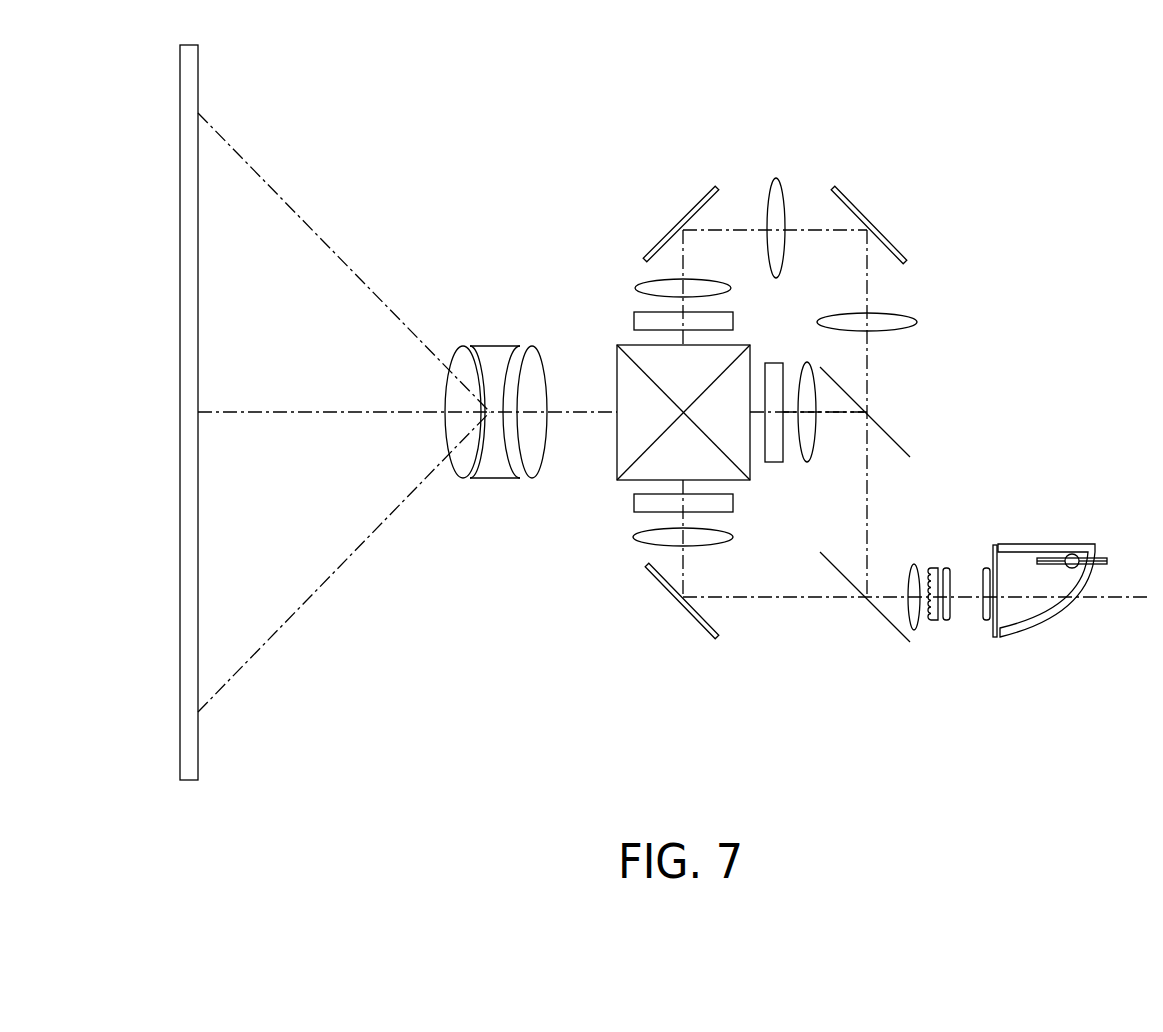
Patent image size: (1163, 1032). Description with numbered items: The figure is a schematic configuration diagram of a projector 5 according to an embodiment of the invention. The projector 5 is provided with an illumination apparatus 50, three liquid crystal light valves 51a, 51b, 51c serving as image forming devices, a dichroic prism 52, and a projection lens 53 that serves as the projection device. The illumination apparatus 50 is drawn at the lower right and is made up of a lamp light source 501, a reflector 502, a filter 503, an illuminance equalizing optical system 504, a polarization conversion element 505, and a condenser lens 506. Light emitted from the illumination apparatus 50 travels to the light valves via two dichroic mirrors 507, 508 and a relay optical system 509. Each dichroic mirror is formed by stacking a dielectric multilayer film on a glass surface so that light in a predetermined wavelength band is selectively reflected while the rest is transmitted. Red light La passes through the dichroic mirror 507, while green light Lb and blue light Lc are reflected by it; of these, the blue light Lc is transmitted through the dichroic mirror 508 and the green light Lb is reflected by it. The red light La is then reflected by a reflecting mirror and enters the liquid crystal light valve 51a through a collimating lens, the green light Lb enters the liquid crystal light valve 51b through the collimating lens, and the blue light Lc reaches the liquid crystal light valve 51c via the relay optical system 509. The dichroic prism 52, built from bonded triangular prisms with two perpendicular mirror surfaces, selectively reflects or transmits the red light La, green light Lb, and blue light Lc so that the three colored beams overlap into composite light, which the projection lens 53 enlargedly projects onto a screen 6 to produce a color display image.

The projector 5 is at (890, 421).
The screen 6 is at (188, 748).
The illumination apparatus 50 is at (999, 620).
The lamp light source 501 is at (1072, 553).
The reflector 502 is at (1052, 612).
The filter 503 is at (995, 640).
The illuminance equalizing optical system 504 is at (990, 564).
The polarization conversion element 505 is at (937, 622).
The condenser lens 506 is at (914, 560).
The dichroic mirror 507 is at (895, 632).
The dichroic mirror 508 is at (900, 445).
The relay optical system 509 is at (778, 150).
The liquid crystal light valve 51a is at (634, 504).
The liquid crystal light valve 51b is at (774, 463).
The liquid crystal light valve 51c is at (634, 322).
The dichroic prism 52 is at (623, 376).
The projection lens 53 is at (540, 340).
The red light La is at (806, 600).
The green light Lb is at (838, 416).
The blue light Lc is at (868, 357).